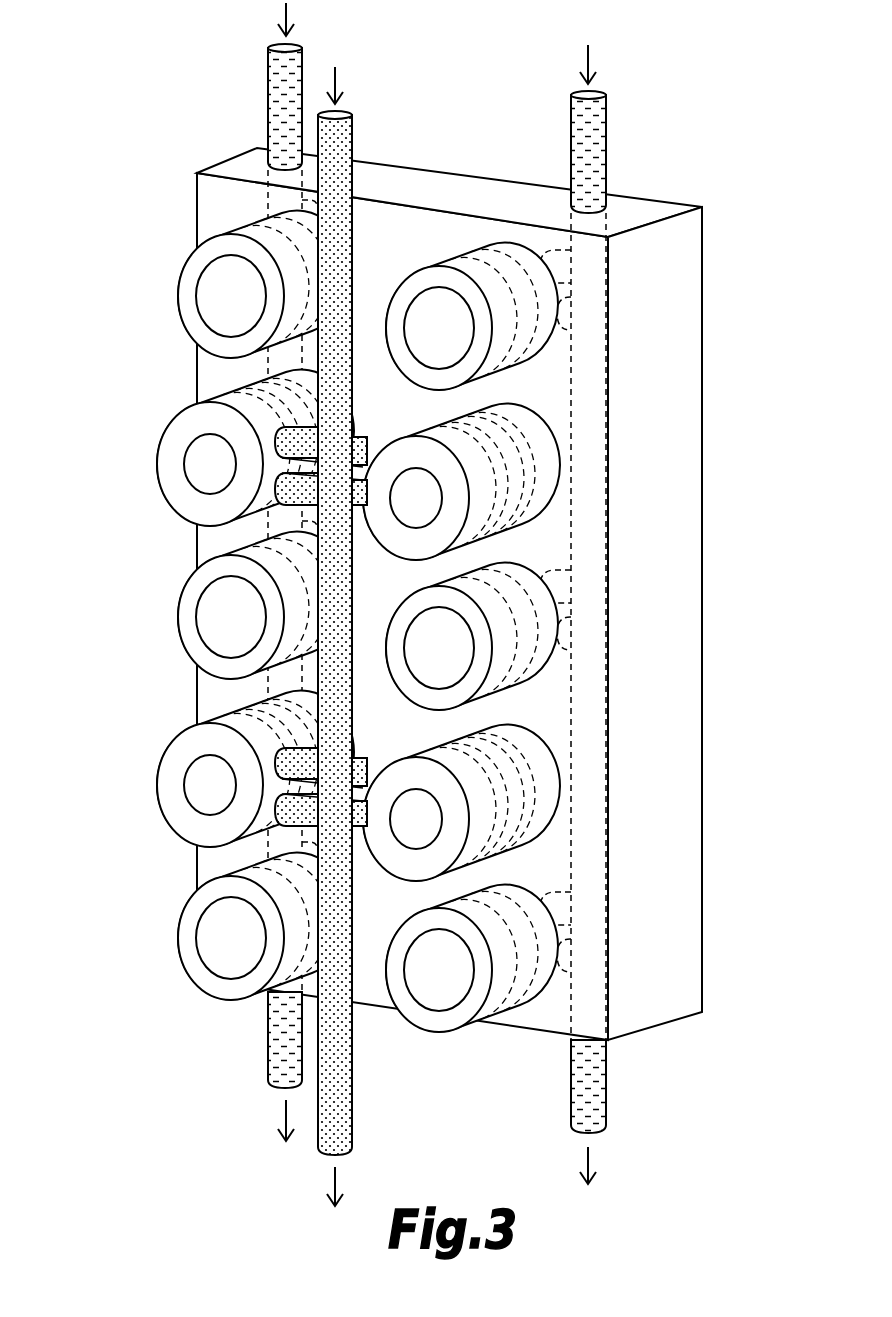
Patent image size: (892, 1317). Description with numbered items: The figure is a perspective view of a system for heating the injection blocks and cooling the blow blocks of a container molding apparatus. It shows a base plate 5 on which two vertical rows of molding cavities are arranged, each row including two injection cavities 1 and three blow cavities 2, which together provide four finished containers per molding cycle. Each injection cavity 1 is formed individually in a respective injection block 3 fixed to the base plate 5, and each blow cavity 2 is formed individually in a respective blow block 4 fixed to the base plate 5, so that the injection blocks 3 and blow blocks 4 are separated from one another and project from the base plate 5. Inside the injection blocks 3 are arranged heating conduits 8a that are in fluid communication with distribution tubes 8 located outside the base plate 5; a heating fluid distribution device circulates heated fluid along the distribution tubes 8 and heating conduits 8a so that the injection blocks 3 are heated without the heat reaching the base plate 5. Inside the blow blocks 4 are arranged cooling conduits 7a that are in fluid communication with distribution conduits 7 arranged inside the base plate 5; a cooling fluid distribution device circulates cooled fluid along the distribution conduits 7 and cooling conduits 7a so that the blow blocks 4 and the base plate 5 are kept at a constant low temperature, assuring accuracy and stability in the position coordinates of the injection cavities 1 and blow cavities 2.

The injection cavity 1 is at (426, 837).
The blow cavity 2 is at (450, 988).
The injection block 3 is at (160, 465).
The blow block 4 is at (183, 295).
The base plate 5 is at (448, 183).
The distribution conduit 7 is at (270, 82).
The cooling conduit 7a is at (240, 217).
The distribution tube 8 is at (350, 135).
The heating conduit 8a is at (275, 388).